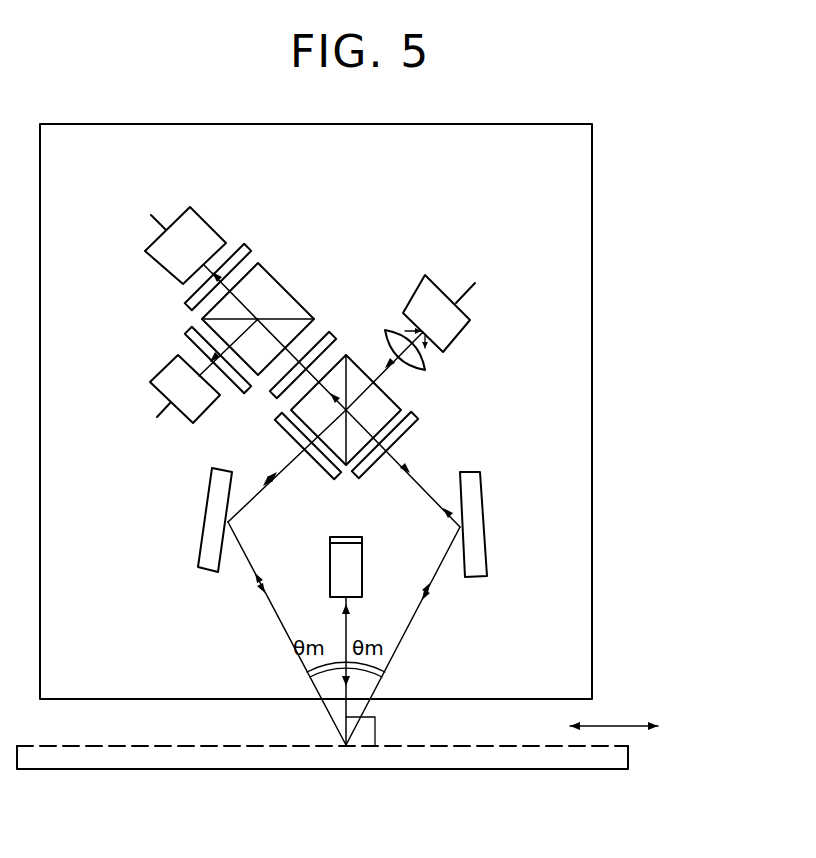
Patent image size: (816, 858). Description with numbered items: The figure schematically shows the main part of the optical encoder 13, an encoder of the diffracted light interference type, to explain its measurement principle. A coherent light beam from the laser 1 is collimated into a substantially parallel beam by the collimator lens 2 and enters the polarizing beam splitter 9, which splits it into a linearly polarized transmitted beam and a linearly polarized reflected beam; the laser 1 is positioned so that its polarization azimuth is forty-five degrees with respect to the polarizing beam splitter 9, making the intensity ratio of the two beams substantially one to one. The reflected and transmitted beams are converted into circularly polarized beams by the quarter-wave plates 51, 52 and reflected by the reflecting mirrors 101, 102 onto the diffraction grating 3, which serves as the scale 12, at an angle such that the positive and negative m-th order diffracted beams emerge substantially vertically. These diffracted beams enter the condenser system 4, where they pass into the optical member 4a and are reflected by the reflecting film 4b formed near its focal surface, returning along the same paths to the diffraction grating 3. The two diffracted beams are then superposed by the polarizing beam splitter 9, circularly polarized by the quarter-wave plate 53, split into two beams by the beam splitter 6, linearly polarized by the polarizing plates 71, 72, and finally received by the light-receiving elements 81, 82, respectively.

The laser 1 is at (468, 318).
The collimator lens 2 is at (420, 371).
The diffraction grating 3 is at (593, 748).
The condenser system 4 is at (353, 542).
The optical member 4a is at (350, 567).
The reflecting film 4b is at (345, 537).
The quarter-wave plate 51 is at (418, 419).
The quarter-wave plate 52 is at (282, 421).
The quarter-wave plate 53 is at (332, 336).
The beam splitter 6 is at (283, 283).
The polarizing plate 71 is at (245, 250).
The polarizing plate 72 is at (188, 331).
The light-receiving element 81 is at (190, 228).
The light-receiving element 82 is at (163, 383).
The polarizing beam splitter 9 is at (358, 357).
The reflecting mirror 101 is at (487, 532).
The reflecting mirror 102 is at (210, 523).
The scale 12 is at (653, 762).
The optical encoder 13 is at (592, 192).